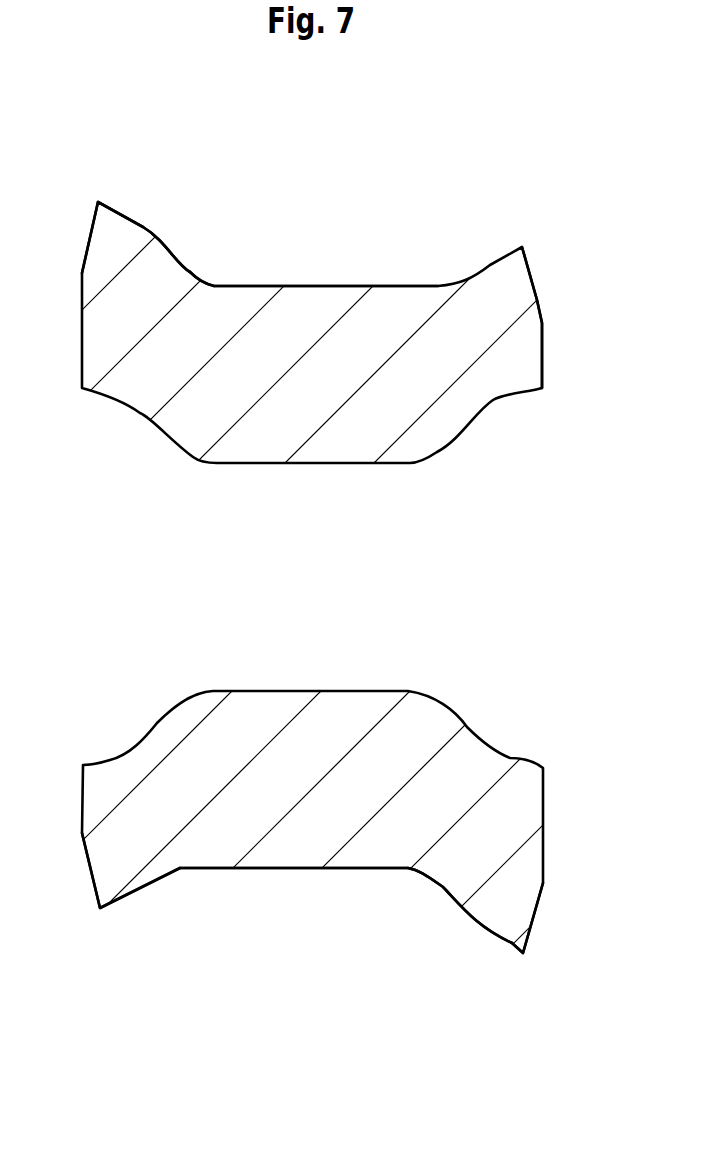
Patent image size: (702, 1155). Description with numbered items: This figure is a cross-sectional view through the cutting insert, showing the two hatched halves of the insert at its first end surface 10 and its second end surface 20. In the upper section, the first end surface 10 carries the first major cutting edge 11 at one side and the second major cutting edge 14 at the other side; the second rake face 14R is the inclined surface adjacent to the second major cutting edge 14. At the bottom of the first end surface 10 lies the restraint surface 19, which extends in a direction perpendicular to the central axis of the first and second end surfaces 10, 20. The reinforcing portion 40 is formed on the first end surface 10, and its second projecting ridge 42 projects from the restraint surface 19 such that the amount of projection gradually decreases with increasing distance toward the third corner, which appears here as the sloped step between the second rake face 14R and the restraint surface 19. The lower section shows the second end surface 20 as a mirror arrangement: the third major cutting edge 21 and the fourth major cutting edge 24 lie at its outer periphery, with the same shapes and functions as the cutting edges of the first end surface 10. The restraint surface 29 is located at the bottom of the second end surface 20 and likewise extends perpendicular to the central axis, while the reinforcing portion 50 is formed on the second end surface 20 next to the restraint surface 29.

The first end surface 10 is at (278, 287).
The first major cutting edge 11 is at (523, 246).
The second major cutting edge 14 is at (98, 201).
The second rake face 14R is at (121, 213).
The reinforcing portion 40 is at (187, 262).
The second projecting ridge 42 is at (194, 272).
The restraint surface 19 is at (318, 285).
The second end surface 20 is at (278, 868).
The third major cutting edge 21 is at (99, 909).
The restraint surface 29 is at (347, 870).
The reinforcing portion 50 is at (438, 888).
The fourth major cutting edge 24 is at (523, 954).